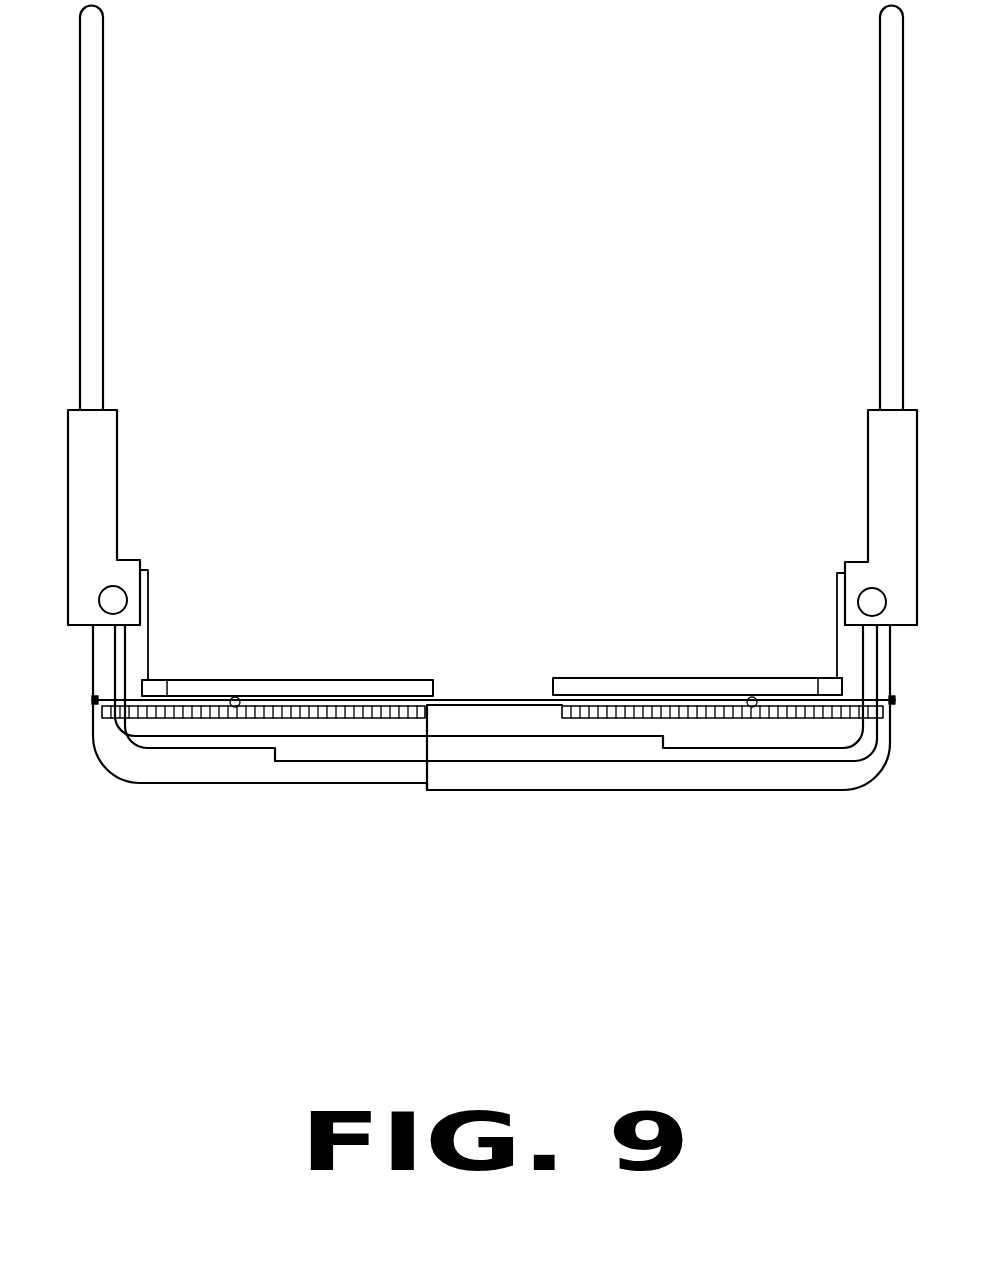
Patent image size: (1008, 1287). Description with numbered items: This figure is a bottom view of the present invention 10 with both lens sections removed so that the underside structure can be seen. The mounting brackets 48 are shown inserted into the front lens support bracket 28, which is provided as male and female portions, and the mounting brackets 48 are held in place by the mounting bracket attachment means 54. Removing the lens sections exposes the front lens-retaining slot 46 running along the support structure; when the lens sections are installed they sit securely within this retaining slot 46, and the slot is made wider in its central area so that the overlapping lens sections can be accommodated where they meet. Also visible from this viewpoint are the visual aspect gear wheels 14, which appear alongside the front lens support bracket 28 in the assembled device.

The present invention 10 is at (483, 295).
The visual aspect gear wheels 14 is at (588, 677).
The front lens support bracket 28 is at (218, 770).
The front lens-retaining slot 46 is at (680, 755).
The mounting brackets 48 is at (333, 680).
The mounting bracket attachment means 54 is at (848, 693).